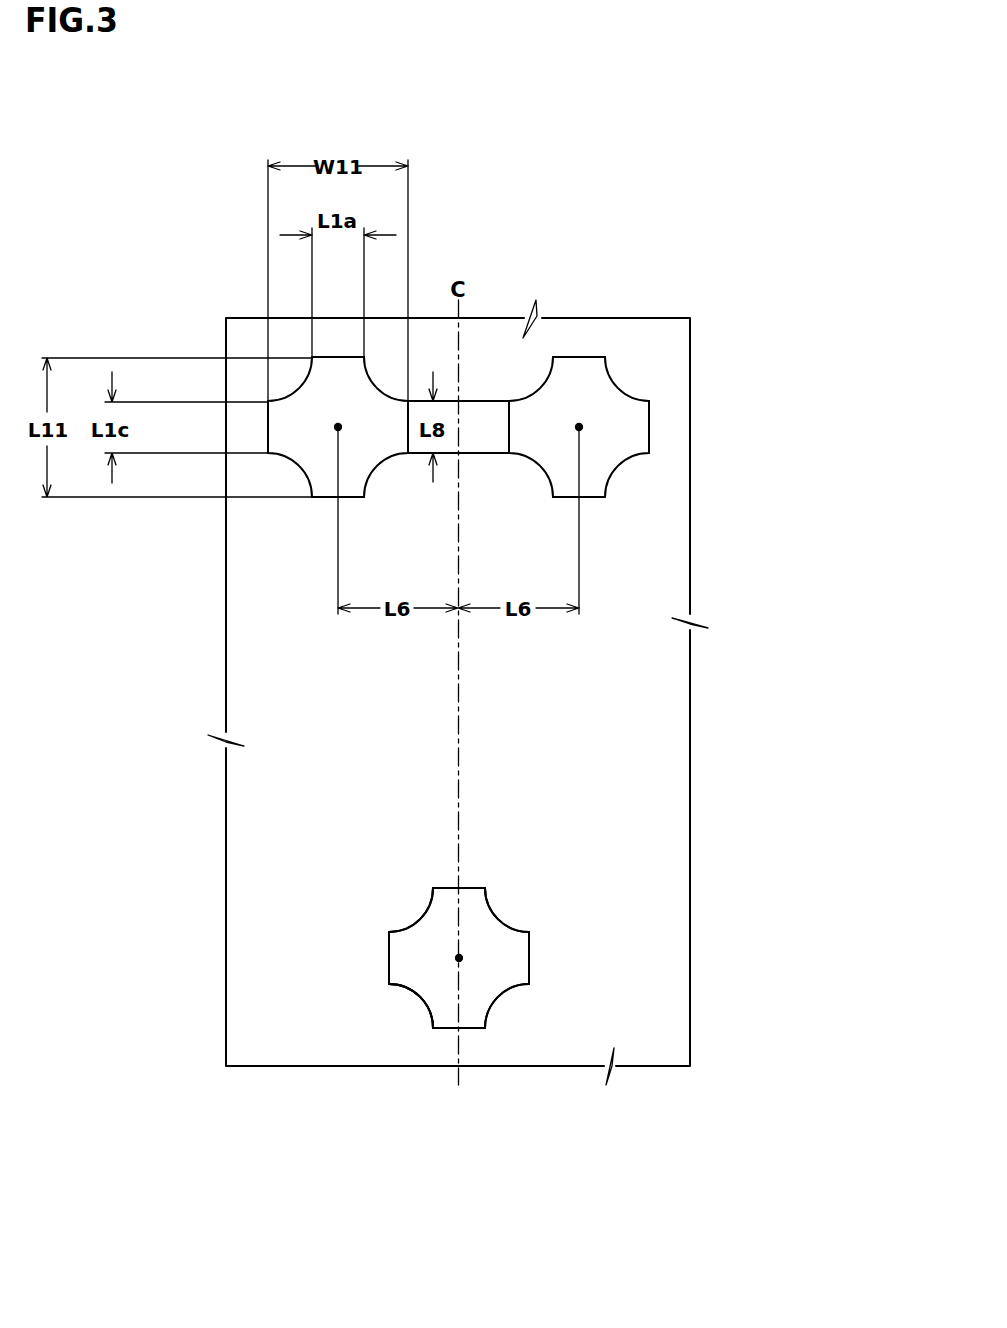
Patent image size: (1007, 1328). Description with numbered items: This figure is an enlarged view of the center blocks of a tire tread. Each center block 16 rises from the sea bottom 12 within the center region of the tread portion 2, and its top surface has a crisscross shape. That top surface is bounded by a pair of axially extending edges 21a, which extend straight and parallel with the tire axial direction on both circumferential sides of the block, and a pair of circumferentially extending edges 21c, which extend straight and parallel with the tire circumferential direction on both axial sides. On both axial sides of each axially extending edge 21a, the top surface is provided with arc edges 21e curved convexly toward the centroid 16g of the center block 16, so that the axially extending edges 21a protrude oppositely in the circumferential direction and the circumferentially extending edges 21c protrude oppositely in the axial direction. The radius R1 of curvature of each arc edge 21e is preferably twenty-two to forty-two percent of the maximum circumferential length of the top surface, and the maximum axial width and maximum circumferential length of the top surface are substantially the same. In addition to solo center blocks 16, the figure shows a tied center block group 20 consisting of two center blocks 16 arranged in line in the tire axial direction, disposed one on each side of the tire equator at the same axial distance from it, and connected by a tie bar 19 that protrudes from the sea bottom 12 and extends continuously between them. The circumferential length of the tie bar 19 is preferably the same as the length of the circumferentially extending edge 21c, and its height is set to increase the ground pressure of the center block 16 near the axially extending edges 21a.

The tread portion 2 is at (389, 640).
The sea bottom 12 is at (297, 690).
The center block 16 is at (379, 411).
The centroid 16g is at (338, 427).
The tie bar 19 is at (491, 416).
The tied center block group 20 is at (367, 591).
The axially extending edge 21a is at (337, 357).
The circumferentially extending edge 21c is at (268, 428).
The arc edge 21e is at (425, 903).
The radius of curvature of the arc edge R1 is at (416, 1012).